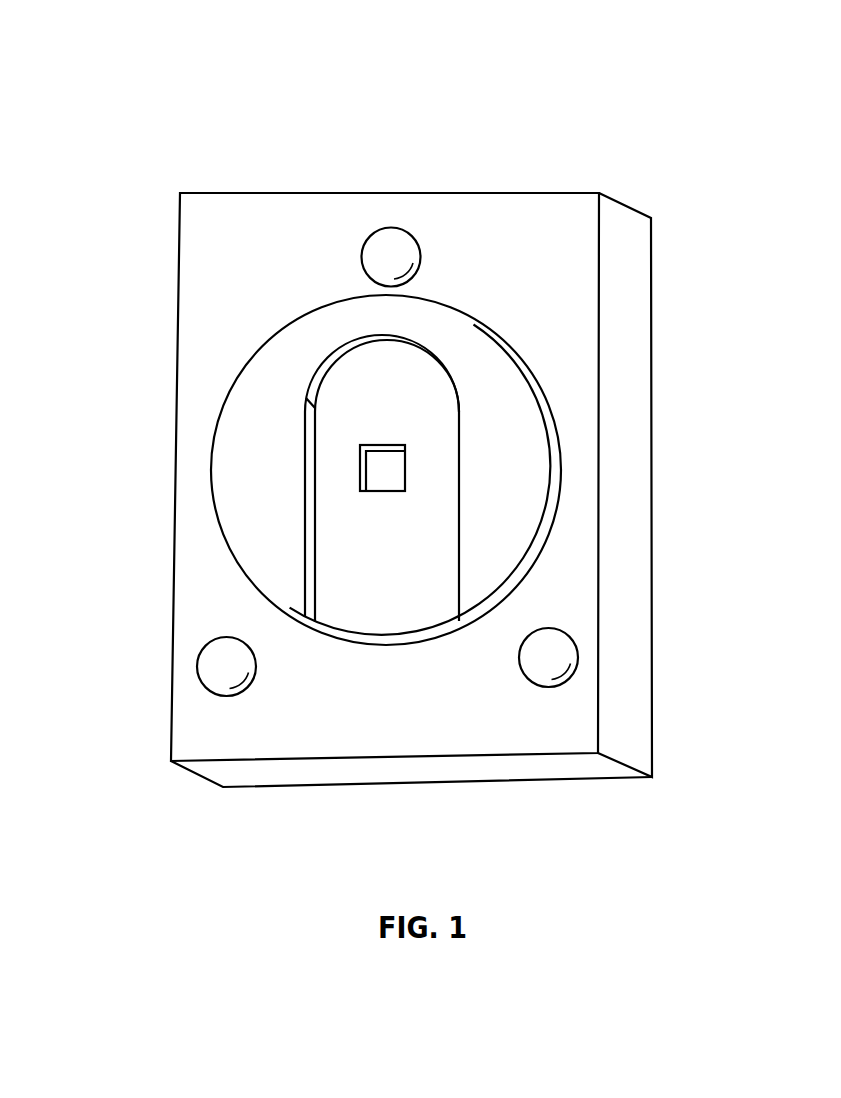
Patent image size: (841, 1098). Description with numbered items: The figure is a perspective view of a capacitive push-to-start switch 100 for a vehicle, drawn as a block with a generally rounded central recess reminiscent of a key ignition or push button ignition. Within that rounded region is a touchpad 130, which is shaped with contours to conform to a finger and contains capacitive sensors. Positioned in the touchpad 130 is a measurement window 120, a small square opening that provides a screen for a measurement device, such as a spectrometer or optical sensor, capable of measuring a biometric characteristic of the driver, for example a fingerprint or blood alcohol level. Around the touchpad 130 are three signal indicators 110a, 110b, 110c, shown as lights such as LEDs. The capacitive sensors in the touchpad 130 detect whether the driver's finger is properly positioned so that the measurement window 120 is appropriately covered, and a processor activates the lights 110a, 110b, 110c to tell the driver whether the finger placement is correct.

The capacitive push-to-start switch 100 is at (126, 50).
The signal indicator 110a is at (394, 237).
The signal indicator 110b is at (578, 667).
The signal indicator 110c is at (197, 666).
The measurement window 120 is at (405, 468).
The touchpad 130 is at (402, 584).